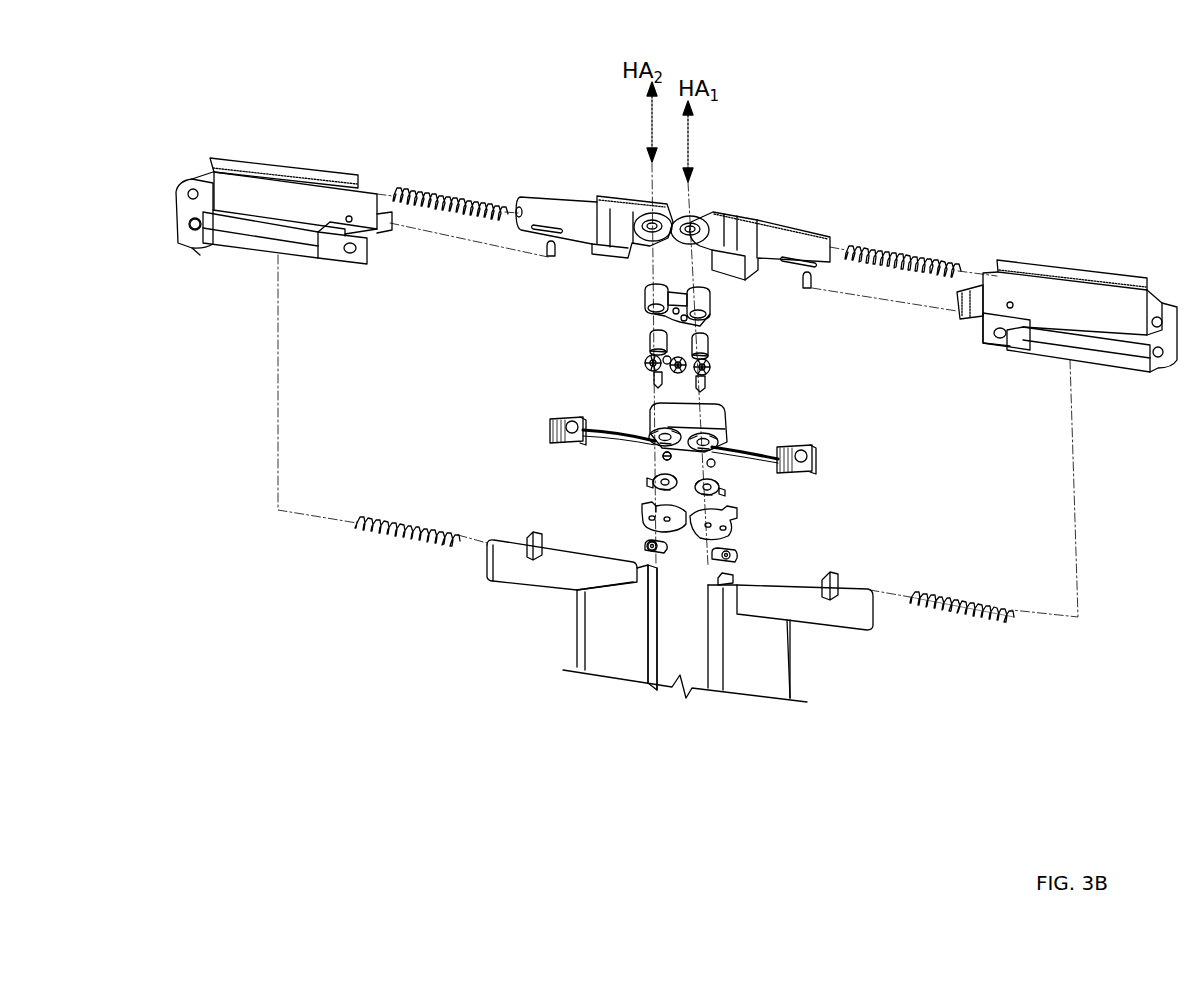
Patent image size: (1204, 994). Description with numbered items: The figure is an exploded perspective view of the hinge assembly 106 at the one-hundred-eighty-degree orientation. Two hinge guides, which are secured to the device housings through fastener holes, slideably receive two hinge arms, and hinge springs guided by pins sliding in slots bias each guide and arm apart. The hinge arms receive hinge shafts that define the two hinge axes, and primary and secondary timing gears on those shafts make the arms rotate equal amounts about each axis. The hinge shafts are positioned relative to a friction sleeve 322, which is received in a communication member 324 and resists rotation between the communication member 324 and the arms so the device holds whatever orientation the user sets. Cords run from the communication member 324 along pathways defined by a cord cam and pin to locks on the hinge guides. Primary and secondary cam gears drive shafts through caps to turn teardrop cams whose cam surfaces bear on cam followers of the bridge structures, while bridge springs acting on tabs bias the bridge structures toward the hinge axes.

The hinge assembly 106 is at (923, 132).
The friction sleeve 322 is at (650, 300).
The communication member 324 is at (688, 427).